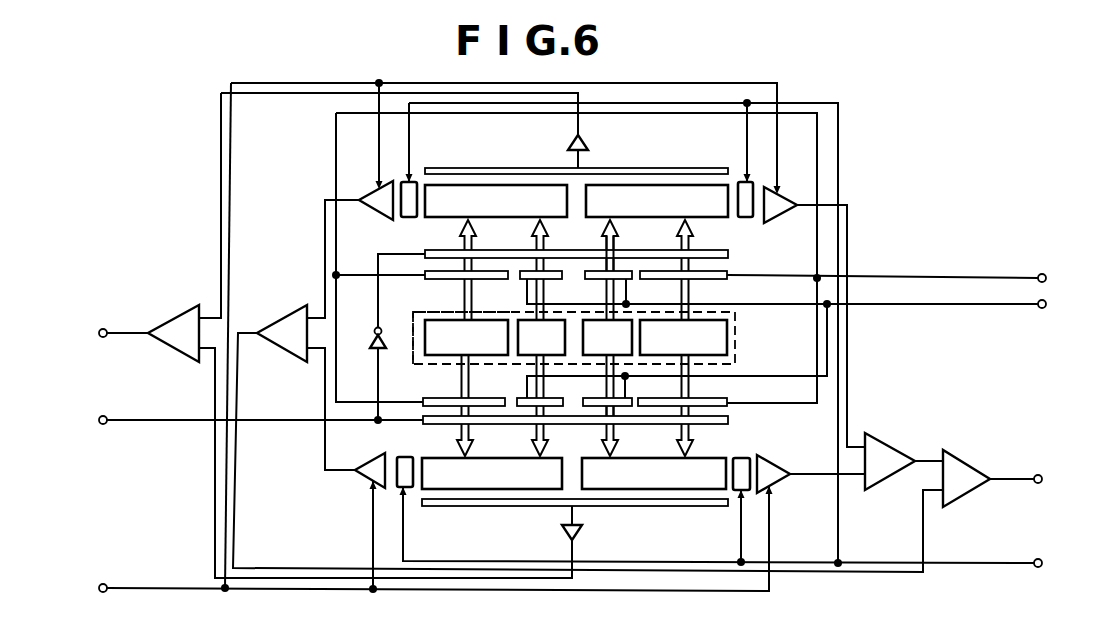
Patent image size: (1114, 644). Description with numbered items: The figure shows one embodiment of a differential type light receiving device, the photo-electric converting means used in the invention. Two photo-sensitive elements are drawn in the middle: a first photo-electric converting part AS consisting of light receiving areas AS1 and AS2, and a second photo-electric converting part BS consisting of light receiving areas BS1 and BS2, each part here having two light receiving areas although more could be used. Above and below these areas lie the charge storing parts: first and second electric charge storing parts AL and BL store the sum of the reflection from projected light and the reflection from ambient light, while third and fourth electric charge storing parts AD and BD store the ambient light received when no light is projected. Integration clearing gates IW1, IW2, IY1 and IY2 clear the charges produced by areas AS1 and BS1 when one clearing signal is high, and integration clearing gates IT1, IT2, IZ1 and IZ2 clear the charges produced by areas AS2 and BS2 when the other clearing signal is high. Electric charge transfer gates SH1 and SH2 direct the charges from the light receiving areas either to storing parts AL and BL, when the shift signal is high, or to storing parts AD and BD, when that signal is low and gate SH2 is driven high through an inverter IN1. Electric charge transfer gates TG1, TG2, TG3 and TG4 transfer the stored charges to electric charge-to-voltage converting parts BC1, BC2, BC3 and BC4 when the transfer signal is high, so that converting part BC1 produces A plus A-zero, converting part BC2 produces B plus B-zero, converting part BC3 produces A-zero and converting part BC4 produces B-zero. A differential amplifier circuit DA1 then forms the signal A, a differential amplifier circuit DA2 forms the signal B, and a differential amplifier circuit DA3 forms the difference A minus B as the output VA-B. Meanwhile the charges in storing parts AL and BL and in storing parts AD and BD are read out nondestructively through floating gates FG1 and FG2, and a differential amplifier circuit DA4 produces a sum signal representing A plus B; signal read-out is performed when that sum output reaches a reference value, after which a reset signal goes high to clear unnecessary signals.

The fourth electric charge storing part BD is at (496, 201).
The third electric charge storing part AD is at (657, 201).
The second electric charge storing part BL is at (492, 473).
The first electric charge storing part AL is at (654, 473).
The second photo-electric converting part BS is at (412, 338).
The light receiving area BS1 is at (541, 337).
The light receiving area BS2 is at (466, 337).
The first photo-electric converting part AS is at (737, 350).
The light receiving area AS1 is at (607, 337).
The light receiving area AS2 is at (683, 337).
The electric charge transfer gate TG1 is at (740, 492).
The electric charge transfer gate TG2 is at (410, 488).
The electric charge transfer gate TG3 is at (740, 185).
The electric charge transfer gate TG4 is at (416, 185).
The electric charge-to-voltage converting part BC1 is at (774, 483).
The electric charge-to-voltage converting part BC2 is at (367, 478).
The electric charge-to-voltage converting part BC3 is at (778, 195).
The electric charge-to-voltage converting part BC4 is at (372, 192).
The floating gate FG1 is at (600, 507).
The floating gate FG2 is at (556, 168).
The differential amplifier circuit DA1 is at (888, 432).
The differential amplifier circuit DA2 is at (292, 322).
The differential amplifier circuit DA3 is at (965, 456).
The differential amplifier circuit DA4 is at (182, 322).
The inverter IN1 is at (370, 346).
The integration clearing gate IZ1 is at (433, 398).
The integration clearing gate IZ2 is at (428, 279).
The integration clearing gate IY1 is at (524, 376).
The integration clearing gate IY2 is at (524, 295).
The integration clearing gate IT1 is at (716, 400).
The integration clearing gate IT2 is at (716, 274).
The integration clearing gate IW1 is at (622, 408).
The integration clearing gate IW2 is at (617, 270).
The electric charge transfer gate SH1 is at (716, 425).
The electric charge transfer gate SH2 is at (716, 252).
The difference output signal VA-B is at (1062, 483).